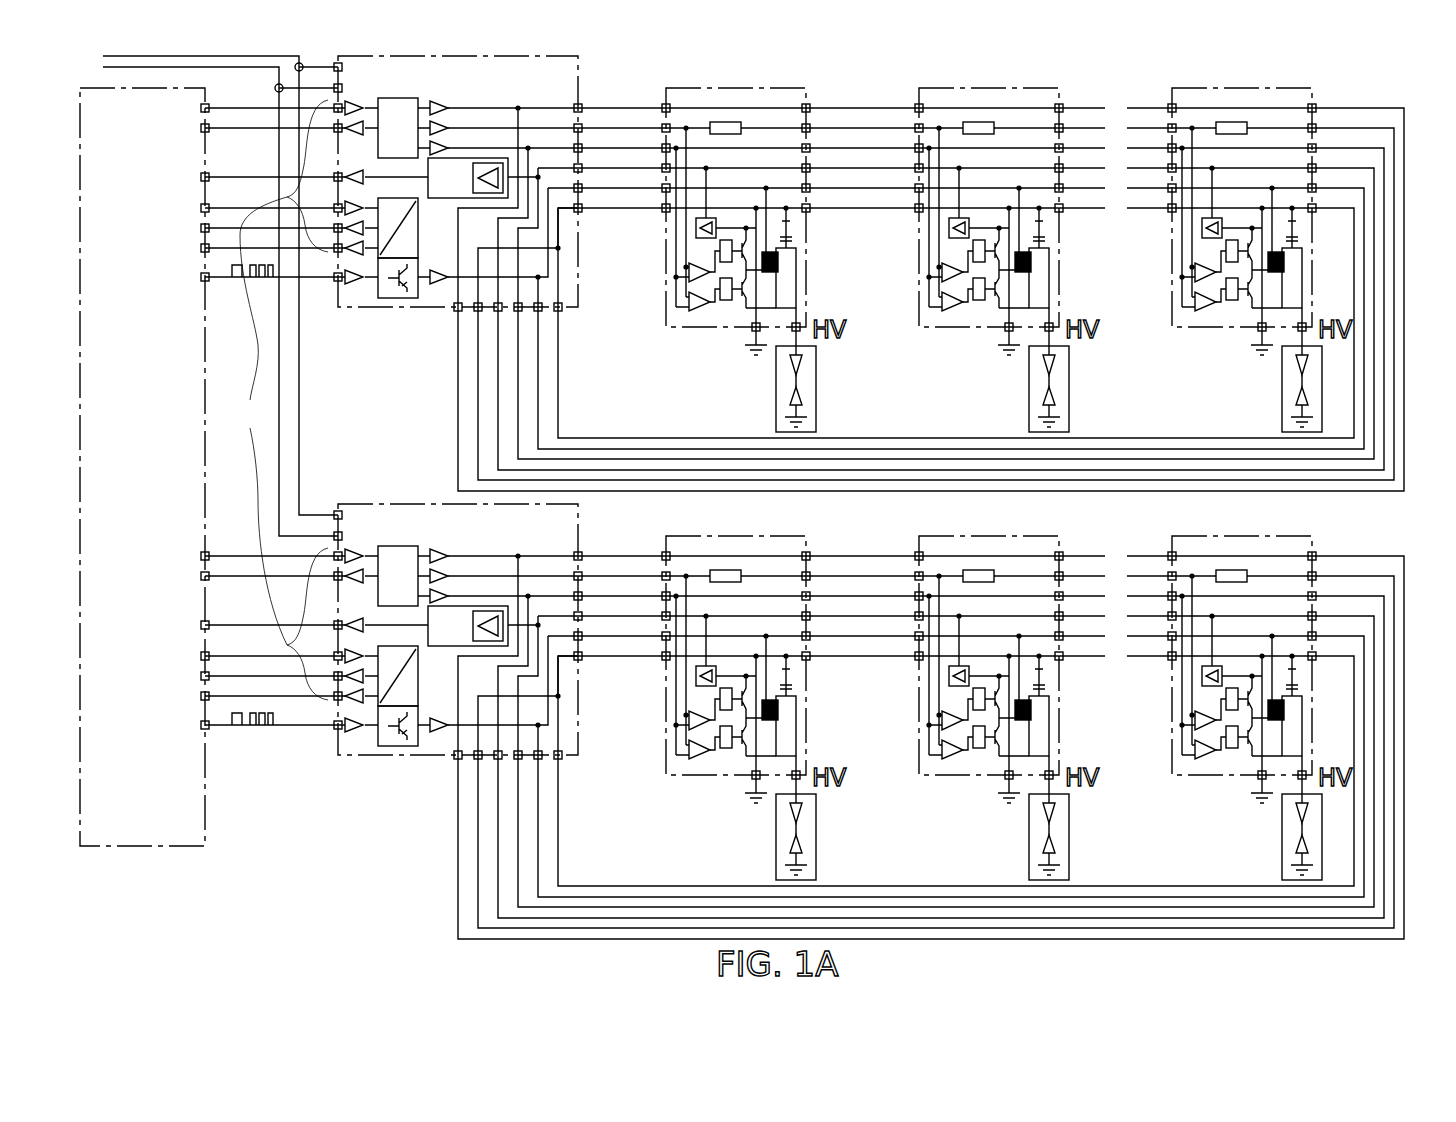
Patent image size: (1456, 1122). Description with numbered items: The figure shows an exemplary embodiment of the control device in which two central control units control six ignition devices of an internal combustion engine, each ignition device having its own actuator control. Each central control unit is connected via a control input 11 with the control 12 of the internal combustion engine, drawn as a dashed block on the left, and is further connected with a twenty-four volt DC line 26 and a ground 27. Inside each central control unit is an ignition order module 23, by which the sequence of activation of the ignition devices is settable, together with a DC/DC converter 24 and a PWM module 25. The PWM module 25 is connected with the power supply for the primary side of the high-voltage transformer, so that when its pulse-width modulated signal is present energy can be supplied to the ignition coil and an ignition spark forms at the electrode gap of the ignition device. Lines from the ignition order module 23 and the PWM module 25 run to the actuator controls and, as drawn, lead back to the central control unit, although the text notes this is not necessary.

The control input 11 is at (271, 412).
The control 12 is at (153, 481).
The ignition order module 23 is at (400, 108).
The DC/DC converter 24 is at (378, 250).
The PWM module 25 is at (400, 298).
The 24 volt DC line 26 is at (170, 56).
The ground 27 is at (118, 66).